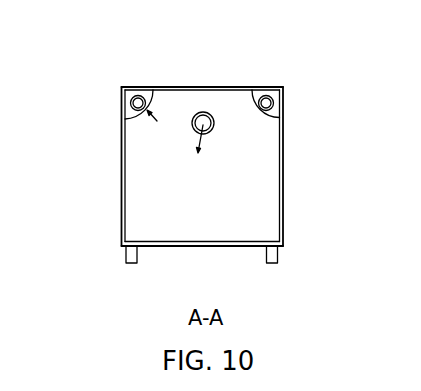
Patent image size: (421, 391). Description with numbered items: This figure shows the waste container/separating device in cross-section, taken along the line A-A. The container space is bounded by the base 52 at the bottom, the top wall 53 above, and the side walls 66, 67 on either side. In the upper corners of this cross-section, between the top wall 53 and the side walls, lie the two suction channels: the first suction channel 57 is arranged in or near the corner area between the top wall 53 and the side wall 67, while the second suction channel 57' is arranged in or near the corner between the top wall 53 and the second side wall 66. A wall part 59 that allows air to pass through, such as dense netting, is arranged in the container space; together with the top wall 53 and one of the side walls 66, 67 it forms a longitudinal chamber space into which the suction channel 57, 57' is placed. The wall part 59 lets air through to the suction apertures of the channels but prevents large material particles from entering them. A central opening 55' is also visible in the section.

The base 52 is at (220, 248).
The top wall 53 is at (195, 88).
The central opening 55' is at (192, 142).
The first suction channel 57 is at (303, 88).
The second suction channel 57' is at (114, 76).
The wall part 59 is at (145, 116).
The side wall 66 is at (118, 201).
The side wall 67 is at (281, 203).